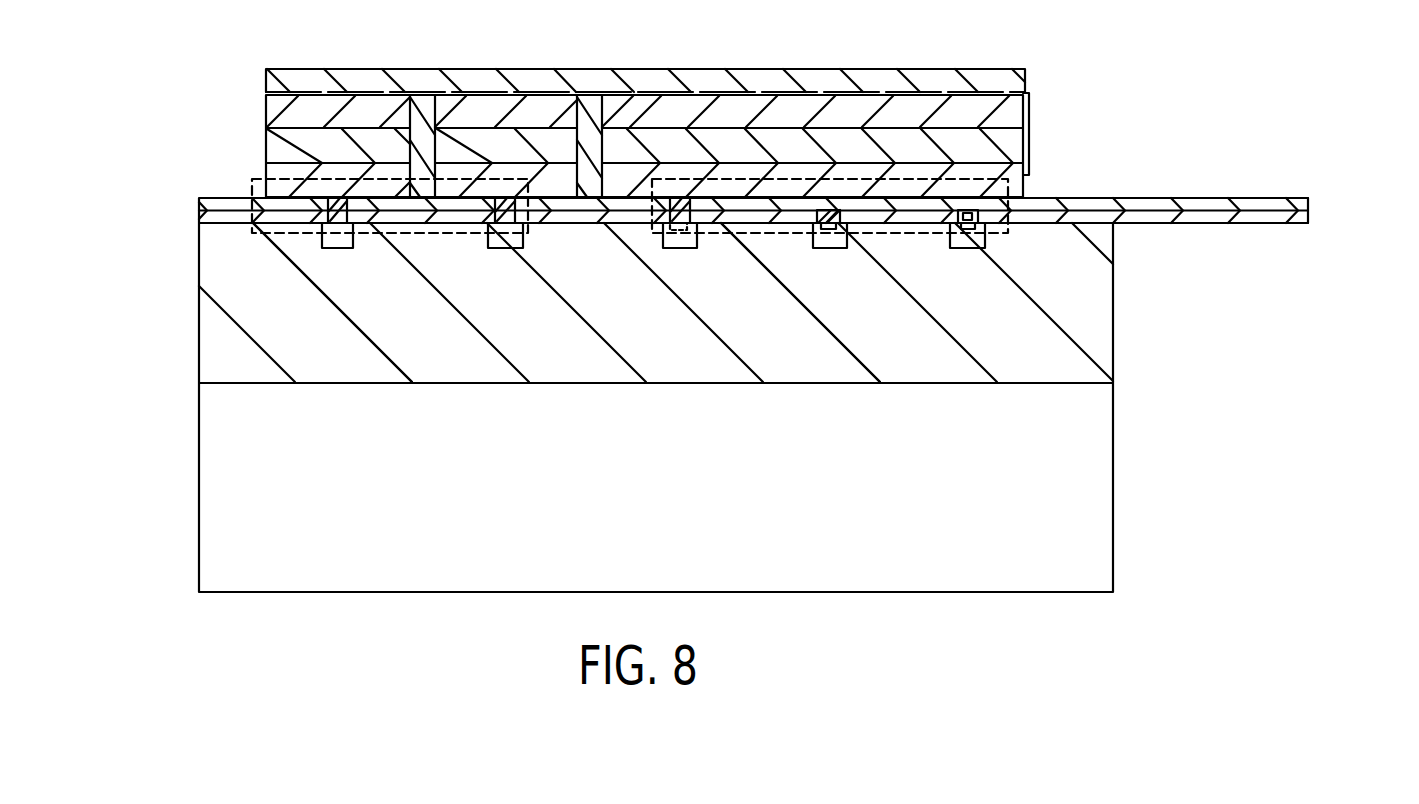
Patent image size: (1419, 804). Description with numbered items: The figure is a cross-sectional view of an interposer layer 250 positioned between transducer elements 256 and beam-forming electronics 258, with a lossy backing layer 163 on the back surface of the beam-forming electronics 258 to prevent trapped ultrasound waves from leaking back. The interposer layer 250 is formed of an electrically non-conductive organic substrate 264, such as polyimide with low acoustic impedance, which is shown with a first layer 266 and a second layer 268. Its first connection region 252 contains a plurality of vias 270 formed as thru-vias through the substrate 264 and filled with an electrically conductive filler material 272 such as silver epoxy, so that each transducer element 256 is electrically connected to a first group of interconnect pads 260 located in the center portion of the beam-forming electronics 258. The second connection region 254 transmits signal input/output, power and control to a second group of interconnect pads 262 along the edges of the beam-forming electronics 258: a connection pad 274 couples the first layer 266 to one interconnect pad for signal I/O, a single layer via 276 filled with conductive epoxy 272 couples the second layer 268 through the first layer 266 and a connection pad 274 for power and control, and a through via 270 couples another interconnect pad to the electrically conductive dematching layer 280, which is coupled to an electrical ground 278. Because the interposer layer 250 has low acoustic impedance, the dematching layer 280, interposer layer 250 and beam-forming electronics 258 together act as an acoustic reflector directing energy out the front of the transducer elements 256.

The lossy backing layer 163 is at (1115, 458).
The interposer layer 250 is at (1310, 168).
The first connection region 252 is at (247, 178).
The second connection region 254 is at (1029, 163).
The transducer elements 256 is at (234, 111).
The beam-forming electronics 258 is at (1115, 300).
The first group of interconnect pads 260 is at (349, 262).
The second group of interconnect pads 262 is at (845, 262).
The organic substrate 264 is at (192, 214).
The first layer 266 is at (1260, 223).
The second layer 268 is at (1265, 198).
The vias 270 is at (355, 206).
The electrically conductive filler material 272 is at (507, 200).
The connection pad 274 is at (970, 232).
The single layer via 276 is at (851, 217).
The electrical ground 278 is at (264, 92).
The dematching layer 280 is at (1025, 191).